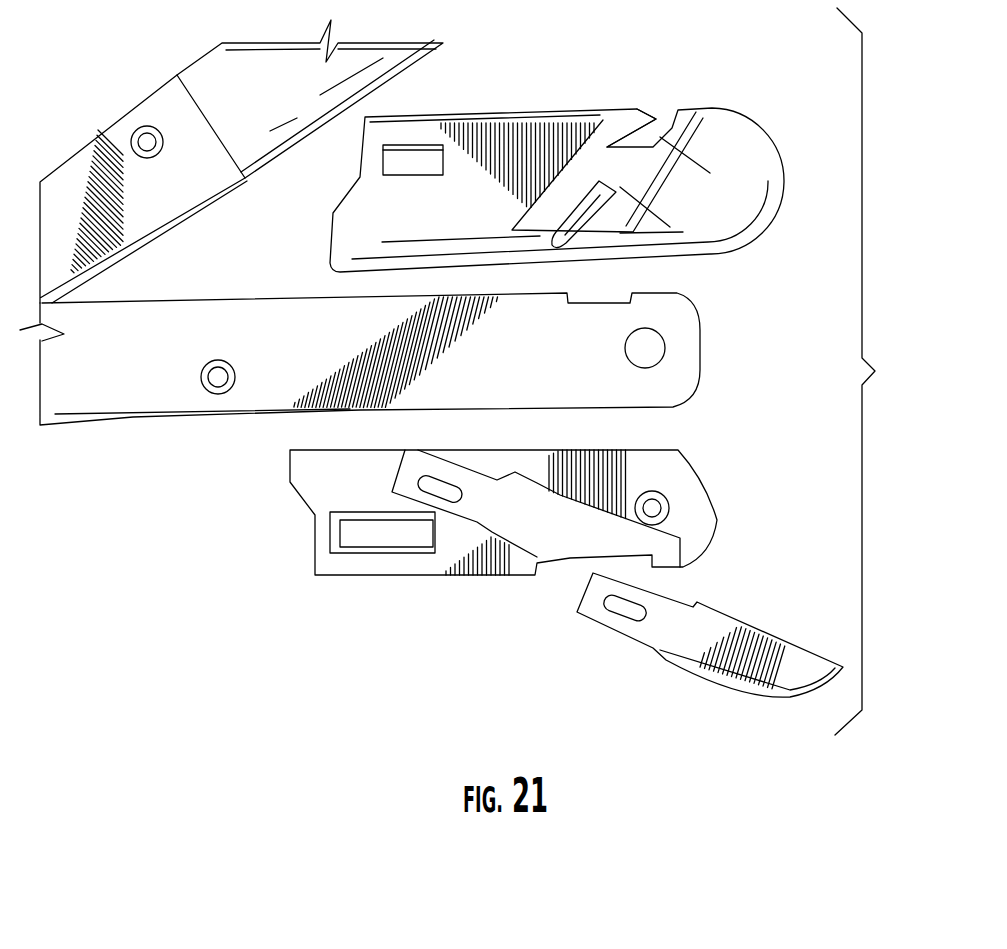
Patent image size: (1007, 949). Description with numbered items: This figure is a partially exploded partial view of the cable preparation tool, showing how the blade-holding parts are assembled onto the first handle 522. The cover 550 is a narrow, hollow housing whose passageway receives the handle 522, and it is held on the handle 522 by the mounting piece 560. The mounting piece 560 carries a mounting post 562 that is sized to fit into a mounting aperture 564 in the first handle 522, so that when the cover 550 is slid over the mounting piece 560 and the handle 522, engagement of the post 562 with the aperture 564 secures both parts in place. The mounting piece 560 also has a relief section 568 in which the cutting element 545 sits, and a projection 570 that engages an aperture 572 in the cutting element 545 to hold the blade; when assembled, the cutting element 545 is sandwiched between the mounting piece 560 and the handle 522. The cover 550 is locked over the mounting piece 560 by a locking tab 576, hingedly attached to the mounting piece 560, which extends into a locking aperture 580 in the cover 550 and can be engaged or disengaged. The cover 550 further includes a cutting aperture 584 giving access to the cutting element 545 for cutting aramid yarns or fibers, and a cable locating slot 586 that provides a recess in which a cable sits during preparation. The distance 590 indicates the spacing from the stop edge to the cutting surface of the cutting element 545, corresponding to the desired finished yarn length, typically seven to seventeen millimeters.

The first handle 522 is at (177, 482).
The cutting element 545 is at (707, 637).
The cover 550 is at (492, 128).
The mounting piece 560 is at (680, 468).
The mounting post 562 is at (660, 517).
The mounting aperture 564 is at (652, 352).
The relief section 568 is at (517, 538).
The projection 570 is at (437, 483).
The aperture 572 is at (624, 607).
The locking tab 576 is at (367, 537).
The locking aperture 580 is at (400, 153).
The cutting aperture 584 is at (664, 110).
The cable locating slot 586 is at (596, 198).
The distance 590 is at (697, 165).